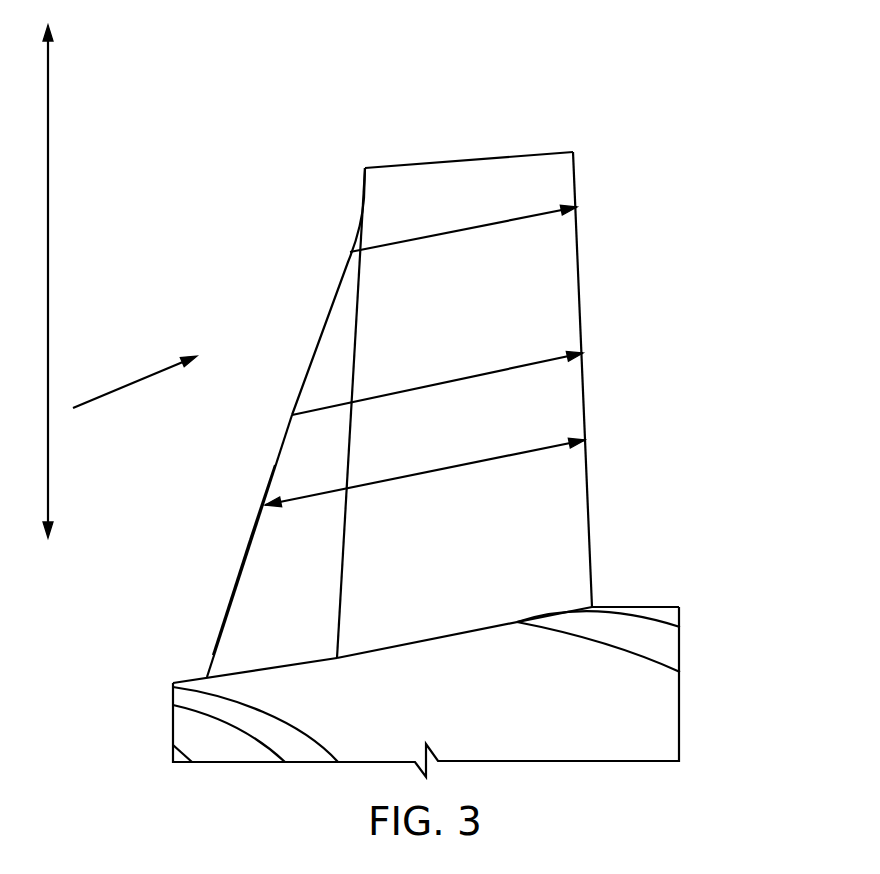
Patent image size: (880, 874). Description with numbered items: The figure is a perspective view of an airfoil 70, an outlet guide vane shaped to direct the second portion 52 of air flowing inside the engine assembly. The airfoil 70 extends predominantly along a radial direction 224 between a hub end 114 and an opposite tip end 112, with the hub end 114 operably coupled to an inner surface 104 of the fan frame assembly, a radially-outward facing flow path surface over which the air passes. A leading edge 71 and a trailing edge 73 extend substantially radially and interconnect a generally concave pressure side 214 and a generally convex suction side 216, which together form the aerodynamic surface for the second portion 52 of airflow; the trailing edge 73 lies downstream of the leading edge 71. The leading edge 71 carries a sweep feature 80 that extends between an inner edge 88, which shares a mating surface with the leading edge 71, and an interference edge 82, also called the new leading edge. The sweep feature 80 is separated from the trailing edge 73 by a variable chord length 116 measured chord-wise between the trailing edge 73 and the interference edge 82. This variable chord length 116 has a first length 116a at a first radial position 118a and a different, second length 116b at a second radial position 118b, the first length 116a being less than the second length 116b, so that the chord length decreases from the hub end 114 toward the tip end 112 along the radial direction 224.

The airfoil 70 is at (433, 80).
The tip end 112 is at (515, 155).
The suction side 216 is at (340, 277).
The interference edge 82 is at (280, 445).
The sweep feature 80 is at (257, 475).
The inner edge 88 is at (220, 597).
The leading edge 71 is at (357, 320).
The trailing edge 73 is at (583, 353).
The pressure side 214 is at (520, 301).
The first length 116a is at (540, 208).
The first radial position 118a is at (577, 207).
The variable chord length 116 is at (393, 393).
The second length 116b is at (547, 442).
The second radial position 118b is at (585, 440).
The inner surface 104 is at (628, 705).
The hub end 114 is at (455, 634).
The radial direction 224 is at (48, 170).
The second portion 52 is at (143, 382).